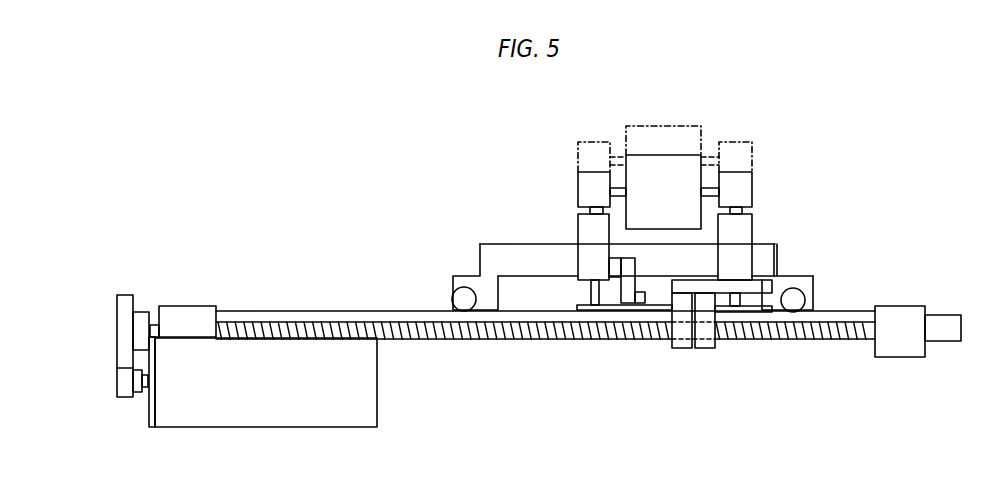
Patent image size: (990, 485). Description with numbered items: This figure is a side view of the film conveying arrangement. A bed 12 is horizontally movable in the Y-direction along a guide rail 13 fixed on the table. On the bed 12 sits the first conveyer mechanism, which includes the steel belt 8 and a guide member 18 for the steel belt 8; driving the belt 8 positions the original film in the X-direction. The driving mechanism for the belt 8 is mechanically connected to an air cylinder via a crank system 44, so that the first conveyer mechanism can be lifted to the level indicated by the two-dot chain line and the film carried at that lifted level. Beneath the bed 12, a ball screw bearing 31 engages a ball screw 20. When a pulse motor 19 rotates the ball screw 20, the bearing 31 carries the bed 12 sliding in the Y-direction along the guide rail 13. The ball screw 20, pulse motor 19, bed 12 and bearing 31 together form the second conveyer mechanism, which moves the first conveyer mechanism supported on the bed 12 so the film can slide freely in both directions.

The steel belt 8 is at (674, 165).
The bed 12 is at (778, 252).
The guide rails 13 is at (332, 310).
The guide member 18 is at (596, 188).
The pulse motor 19 is at (364, 388).
The ball screw 20 is at (545, 341).
The ball screw bearing 31 is at (700, 349).
The crank system 44 is at (630, 290).